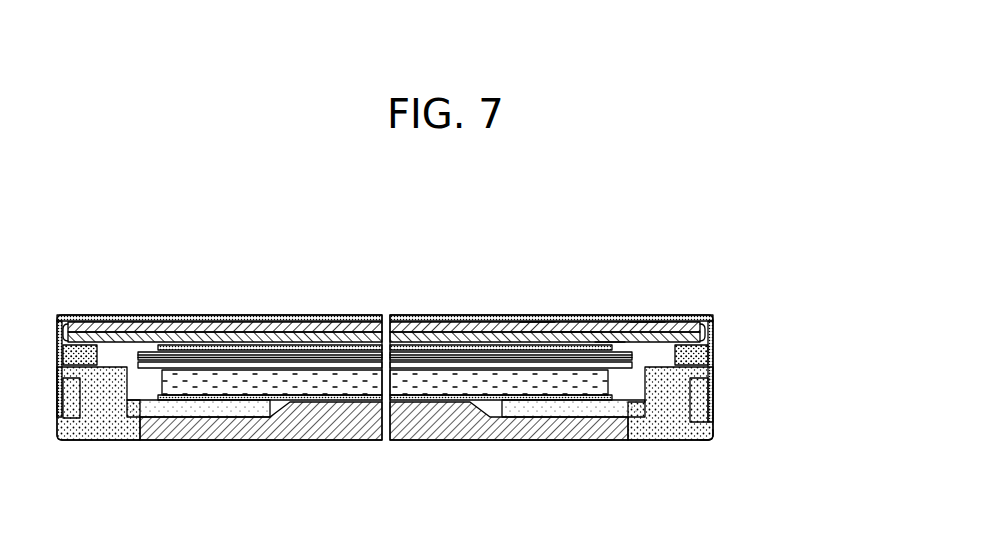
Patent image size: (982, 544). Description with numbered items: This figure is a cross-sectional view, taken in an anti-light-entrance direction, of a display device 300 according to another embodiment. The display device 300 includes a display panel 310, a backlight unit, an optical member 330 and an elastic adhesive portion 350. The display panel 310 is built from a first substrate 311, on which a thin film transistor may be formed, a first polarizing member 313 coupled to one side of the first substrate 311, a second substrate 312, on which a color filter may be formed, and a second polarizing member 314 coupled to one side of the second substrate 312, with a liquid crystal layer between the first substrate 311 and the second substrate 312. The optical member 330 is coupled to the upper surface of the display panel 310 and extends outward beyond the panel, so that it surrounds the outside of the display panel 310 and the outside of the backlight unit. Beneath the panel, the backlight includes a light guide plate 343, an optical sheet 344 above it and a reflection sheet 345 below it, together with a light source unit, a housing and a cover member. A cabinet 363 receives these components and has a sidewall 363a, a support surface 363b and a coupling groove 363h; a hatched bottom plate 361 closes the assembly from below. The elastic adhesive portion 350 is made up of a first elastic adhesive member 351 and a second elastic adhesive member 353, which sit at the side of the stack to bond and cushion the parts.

The display device 300 is at (173, 213).
The display panel 310 is at (508, 268).
The first substrate 311 is at (643, 320).
The second substrate 312 is at (578, 319).
The first polarizing member 313 is at (607, 320).
The second polarizing member 314 is at (537, 320).
The optical member 330 is at (713, 318).
The light guide plate 343 is at (487, 383).
The optical sheet 344 is at (633, 362).
The reflection sheet 345 is at (423, 395).
The elastic adhesive portion 350 is at (777, 368).
The first elastic adhesive member 351 is at (712, 372).
The second elastic adhesive member 353 is at (702, 390).
The bottom plate 361 is at (408, 440).
The cabinet 363 is at (790, 448).
The sidewall 363a is at (672, 397).
The support surface 363b is at (620, 410).
The coupling groove 363h is at (705, 442).